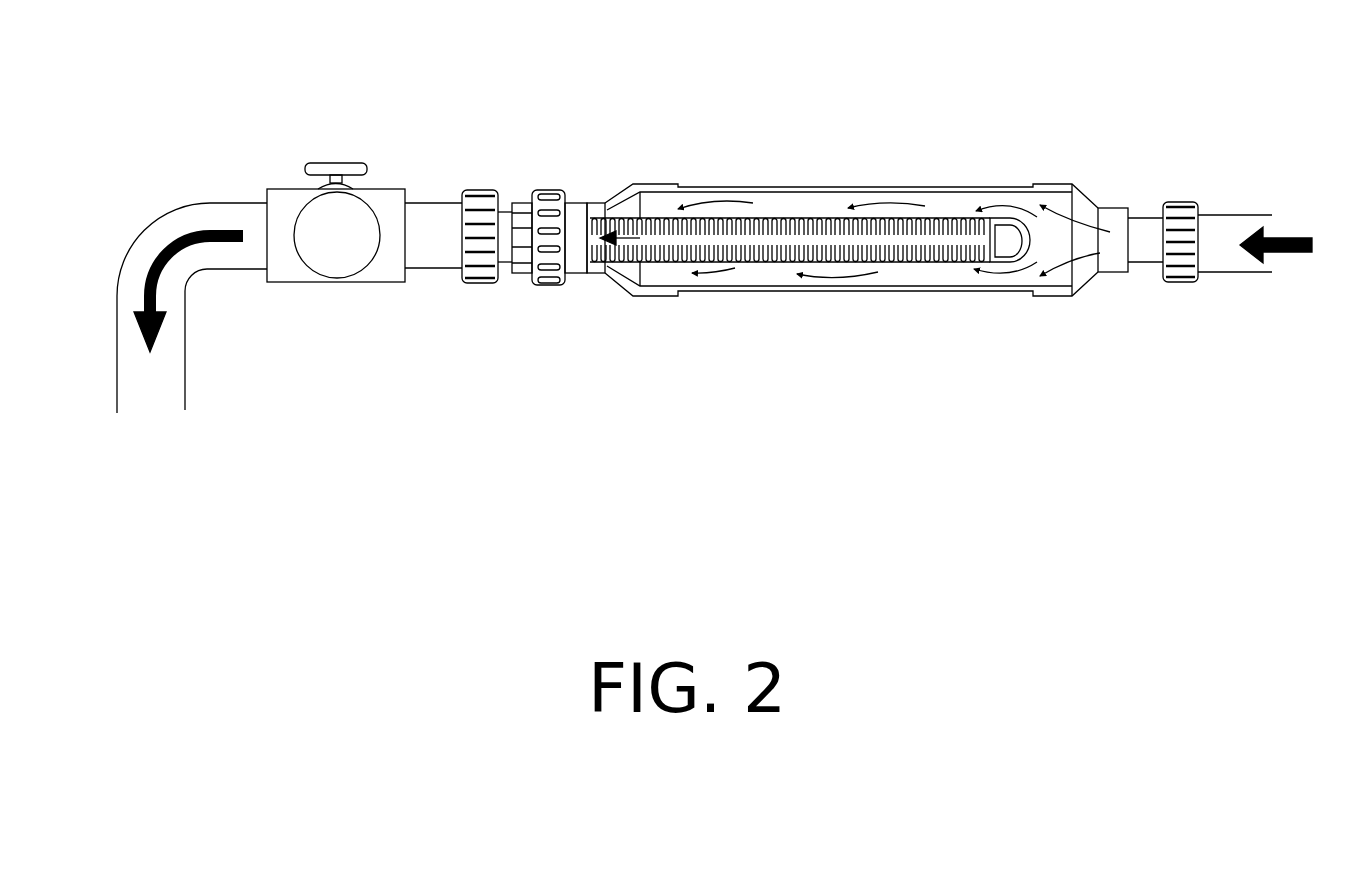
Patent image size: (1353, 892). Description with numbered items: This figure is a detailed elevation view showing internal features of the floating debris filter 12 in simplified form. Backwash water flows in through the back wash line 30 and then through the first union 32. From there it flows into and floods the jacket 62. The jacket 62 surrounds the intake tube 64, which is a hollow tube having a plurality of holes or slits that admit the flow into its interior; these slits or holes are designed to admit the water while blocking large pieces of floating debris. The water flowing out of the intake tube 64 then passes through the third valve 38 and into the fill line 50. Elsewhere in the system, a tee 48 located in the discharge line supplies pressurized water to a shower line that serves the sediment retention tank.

The floating debris filter 12 is at (908, 234).
The back wash line 30 is at (1228, 227).
The first union 32 is at (1177, 252).
The third valve 38 is at (342, 163).
The tee 48 is at (172, 265).
The fill line 50 is at (147, 382).
The jacket 62 is at (908, 275).
The intake tube 64 is at (715, 232).